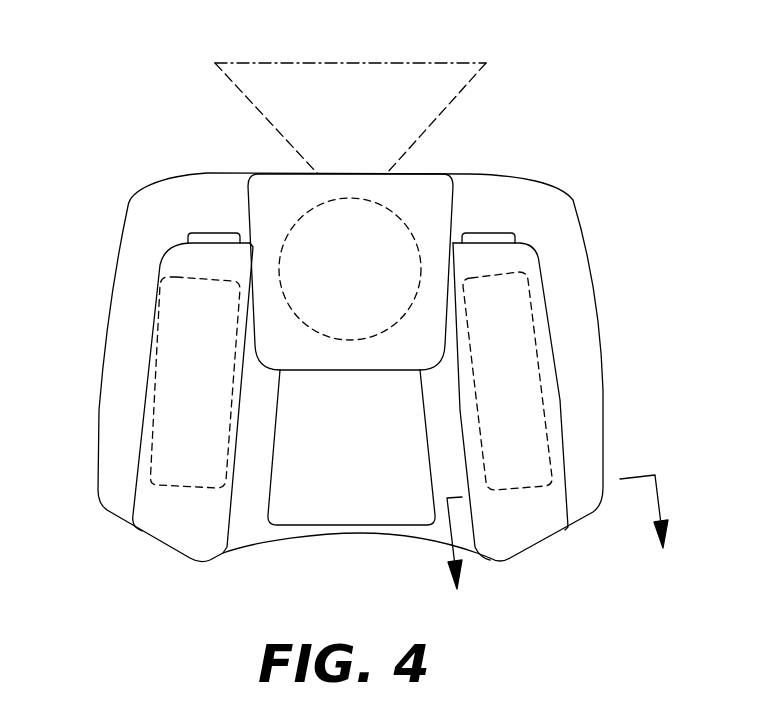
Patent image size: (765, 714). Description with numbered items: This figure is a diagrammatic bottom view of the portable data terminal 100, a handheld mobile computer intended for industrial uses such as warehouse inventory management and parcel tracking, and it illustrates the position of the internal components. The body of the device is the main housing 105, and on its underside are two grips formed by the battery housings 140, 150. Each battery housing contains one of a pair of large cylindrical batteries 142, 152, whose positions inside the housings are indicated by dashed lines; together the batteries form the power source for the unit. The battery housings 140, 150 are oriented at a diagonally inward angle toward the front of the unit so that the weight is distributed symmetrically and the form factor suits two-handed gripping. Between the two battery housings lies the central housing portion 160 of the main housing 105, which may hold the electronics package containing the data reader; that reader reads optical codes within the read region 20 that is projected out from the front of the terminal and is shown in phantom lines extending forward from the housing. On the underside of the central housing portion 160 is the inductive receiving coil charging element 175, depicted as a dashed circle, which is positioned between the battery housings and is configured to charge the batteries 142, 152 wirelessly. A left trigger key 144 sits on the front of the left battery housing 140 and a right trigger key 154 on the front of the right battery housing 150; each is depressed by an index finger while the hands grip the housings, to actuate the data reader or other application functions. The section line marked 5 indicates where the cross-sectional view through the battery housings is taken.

The section line 5- 5 is at (559, 550).
The read region 20 is at (383, 63).
The portable data terminal 100 is at (372, 339).
The main housing 105 is at (562, 170).
The battery housing 140 is at (523, 257).
The battery 142 is at (550, 355).
The left trigger key 144 is at (496, 236).
The battery housing 150 is at (180, 253).
The battery 152 is at (157, 343).
The right trigger key 154 is at (213, 233).
The central housing portion 160 is at (422, 187).
The inductive receiving coil charging element 175 is at (342, 200).